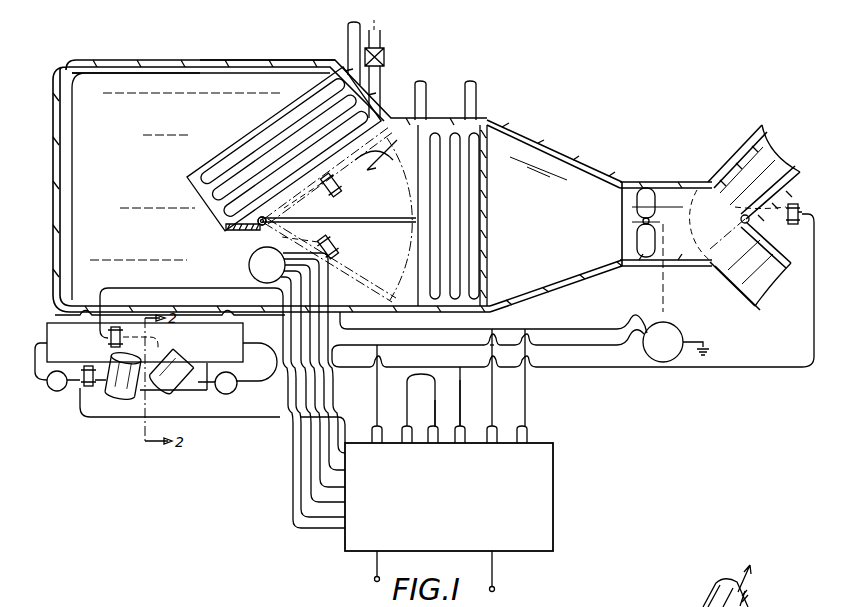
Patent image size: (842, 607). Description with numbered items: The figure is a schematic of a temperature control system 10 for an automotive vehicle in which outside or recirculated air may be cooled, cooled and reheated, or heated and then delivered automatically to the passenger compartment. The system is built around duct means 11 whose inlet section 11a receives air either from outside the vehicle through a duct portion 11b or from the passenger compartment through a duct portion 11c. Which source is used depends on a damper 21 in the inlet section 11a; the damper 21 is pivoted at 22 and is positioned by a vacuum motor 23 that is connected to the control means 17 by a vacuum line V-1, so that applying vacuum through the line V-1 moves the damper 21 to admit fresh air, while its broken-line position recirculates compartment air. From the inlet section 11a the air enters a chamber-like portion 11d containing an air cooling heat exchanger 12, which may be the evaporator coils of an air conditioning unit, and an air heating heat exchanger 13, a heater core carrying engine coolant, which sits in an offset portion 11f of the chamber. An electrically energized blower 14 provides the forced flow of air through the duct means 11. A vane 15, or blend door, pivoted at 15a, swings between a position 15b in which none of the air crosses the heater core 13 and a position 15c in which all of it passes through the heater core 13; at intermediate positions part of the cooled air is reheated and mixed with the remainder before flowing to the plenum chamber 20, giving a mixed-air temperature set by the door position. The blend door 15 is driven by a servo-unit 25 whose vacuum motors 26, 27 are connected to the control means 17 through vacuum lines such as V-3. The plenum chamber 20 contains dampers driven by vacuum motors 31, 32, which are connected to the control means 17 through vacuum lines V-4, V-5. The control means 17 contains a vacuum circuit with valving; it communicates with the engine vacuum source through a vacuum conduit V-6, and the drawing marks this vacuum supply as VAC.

The temperature control system 10 is at (128, 50).
The duct means 11 is at (266, 62).
The inlet section 11a is at (569, 173).
The duct portion 11b is at (777, 167).
The duct portion 11c is at (738, 272).
The chamber-like portion 11d is at (390, 118).
The offset portion 11f is at (177, 91).
The air cooling heat exchanger 12 is at (476, 161).
The air heating heat exchanger 13 is at (242, 153).
The blower 14 is at (688, 319).
The vane 15 is at (360, 207).
The pivot 15a is at (258, 226).
The position 15b is at (318, 184).
The position 15c is at (348, 283).
The control means 17 is at (552, 482).
The plenum chamber 20 is at (58, 326).
The damper 21 is at (727, 202).
The pivot 22 is at (750, 224).
The vacuum motor 23 is at (793, 204).
The servo-unit 25 is at (403, 155).
The vacuum motor 26 is at (338, 244).
The vacuum motor 27 is at (340, 182).
The vacuum motor 31 is at (82, 390).
The vacuum motor 32 is at (107, 338).
The vacuum line V-1 is at (772, 356).
The vacuum line V-3 is at (490, 362).
The vacuum line V-4 is at (206, 291).
The vacuum line V-5 is at (233, 422).
The vacuum conduit V-6 is at (458, 400).
The vacuum source VAC is at (453, 403).